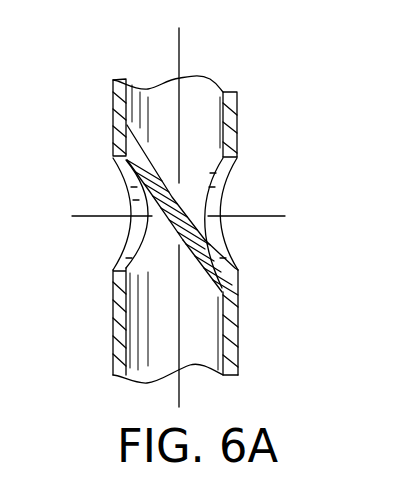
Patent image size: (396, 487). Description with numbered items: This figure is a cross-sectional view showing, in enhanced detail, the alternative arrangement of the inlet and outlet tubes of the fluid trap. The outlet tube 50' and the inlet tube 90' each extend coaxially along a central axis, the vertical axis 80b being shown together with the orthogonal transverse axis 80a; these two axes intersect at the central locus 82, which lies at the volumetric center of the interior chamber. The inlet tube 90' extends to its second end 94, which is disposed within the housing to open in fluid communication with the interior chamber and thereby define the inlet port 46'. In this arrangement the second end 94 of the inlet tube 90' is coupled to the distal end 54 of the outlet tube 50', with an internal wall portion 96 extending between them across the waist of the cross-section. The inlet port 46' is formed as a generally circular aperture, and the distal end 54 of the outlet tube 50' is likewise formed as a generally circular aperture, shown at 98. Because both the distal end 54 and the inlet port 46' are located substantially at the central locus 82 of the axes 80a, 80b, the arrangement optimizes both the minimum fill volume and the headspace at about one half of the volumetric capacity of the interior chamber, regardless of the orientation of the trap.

The central axis 80b is at (178, 55).
The internal wall portion 96 is at (153, 180).
The outlet tube 50' is at (214, 116).
The distal end 54 is at (236, 150).
The generally circular aperture 98 is at (222, 205).
The central axis 80a is at (267, 217).
The central locus 82 is at (235, 259).
The inlet tube 90' is at (276, 322).
The inlet port 46' is at (86, 214).
The second end 94 is at (112, 271).